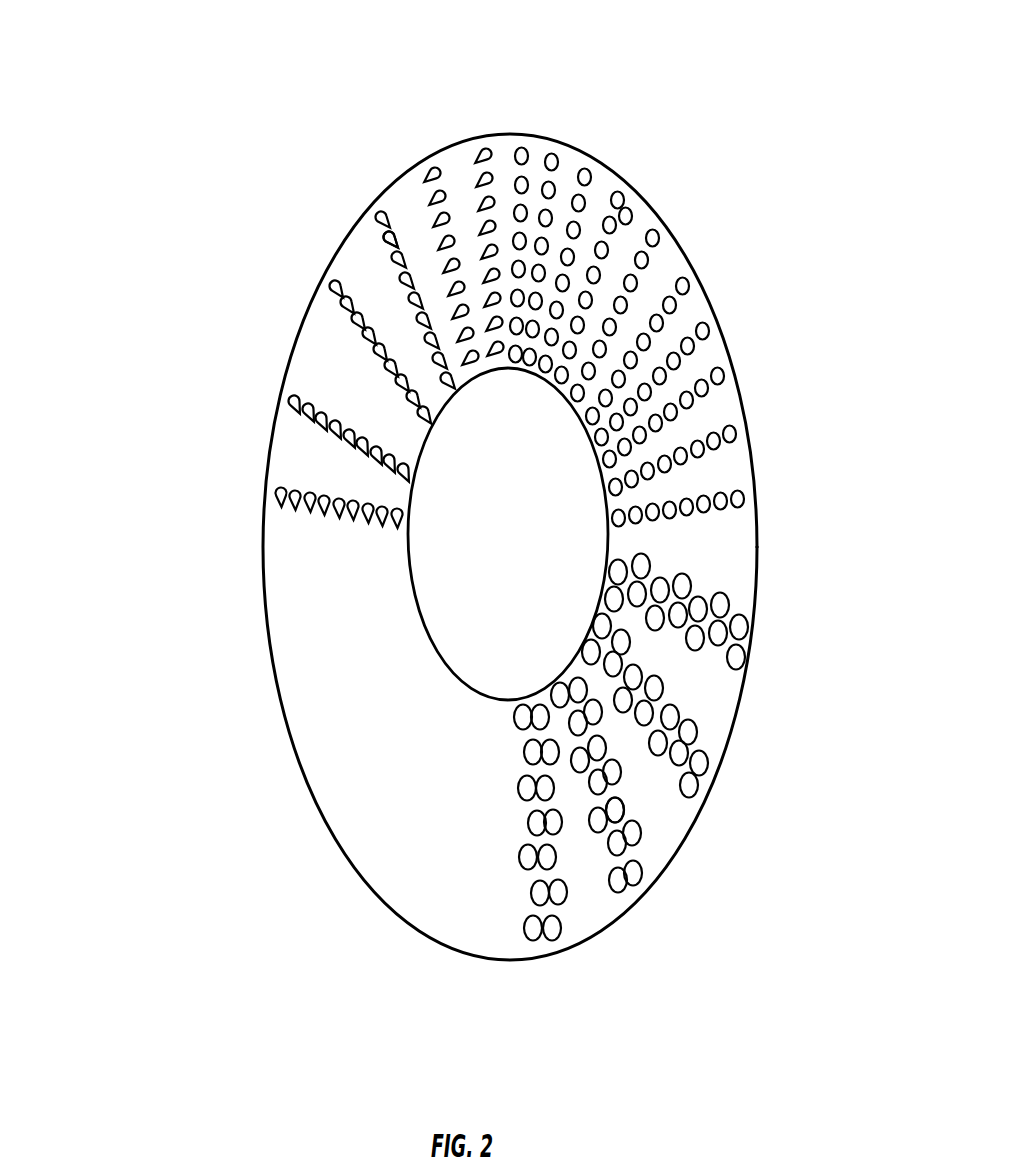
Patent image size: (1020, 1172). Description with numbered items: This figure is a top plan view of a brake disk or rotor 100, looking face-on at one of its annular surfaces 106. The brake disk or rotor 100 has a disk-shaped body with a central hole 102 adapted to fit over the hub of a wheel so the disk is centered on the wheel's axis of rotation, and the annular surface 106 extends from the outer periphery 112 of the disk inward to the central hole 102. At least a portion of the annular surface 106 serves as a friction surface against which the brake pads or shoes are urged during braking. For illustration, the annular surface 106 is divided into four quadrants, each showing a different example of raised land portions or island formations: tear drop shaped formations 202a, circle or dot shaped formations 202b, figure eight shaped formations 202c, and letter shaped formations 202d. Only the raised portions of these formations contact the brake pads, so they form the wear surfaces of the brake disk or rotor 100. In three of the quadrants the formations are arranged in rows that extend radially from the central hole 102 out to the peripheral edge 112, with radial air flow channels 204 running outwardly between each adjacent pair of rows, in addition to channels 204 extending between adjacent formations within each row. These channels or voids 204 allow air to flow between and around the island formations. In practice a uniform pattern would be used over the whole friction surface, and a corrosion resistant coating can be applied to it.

The brake disk or rotor 100 is at (190, 168).
The central hole 102 is at (463, 502).
The annular surface 106 is at (297, 568).
The outer periphery 112 is at (758, 548).
The tear drop shaped formations 202a is at (352, 322).
The circle or dot shaped formations 202b is at (553, 181).
The figure eight shaped formations 202c is at (732, 660).
The letter shaped formations 202d is at (347, 791).
The air flow channels 204 is at (385, 313).